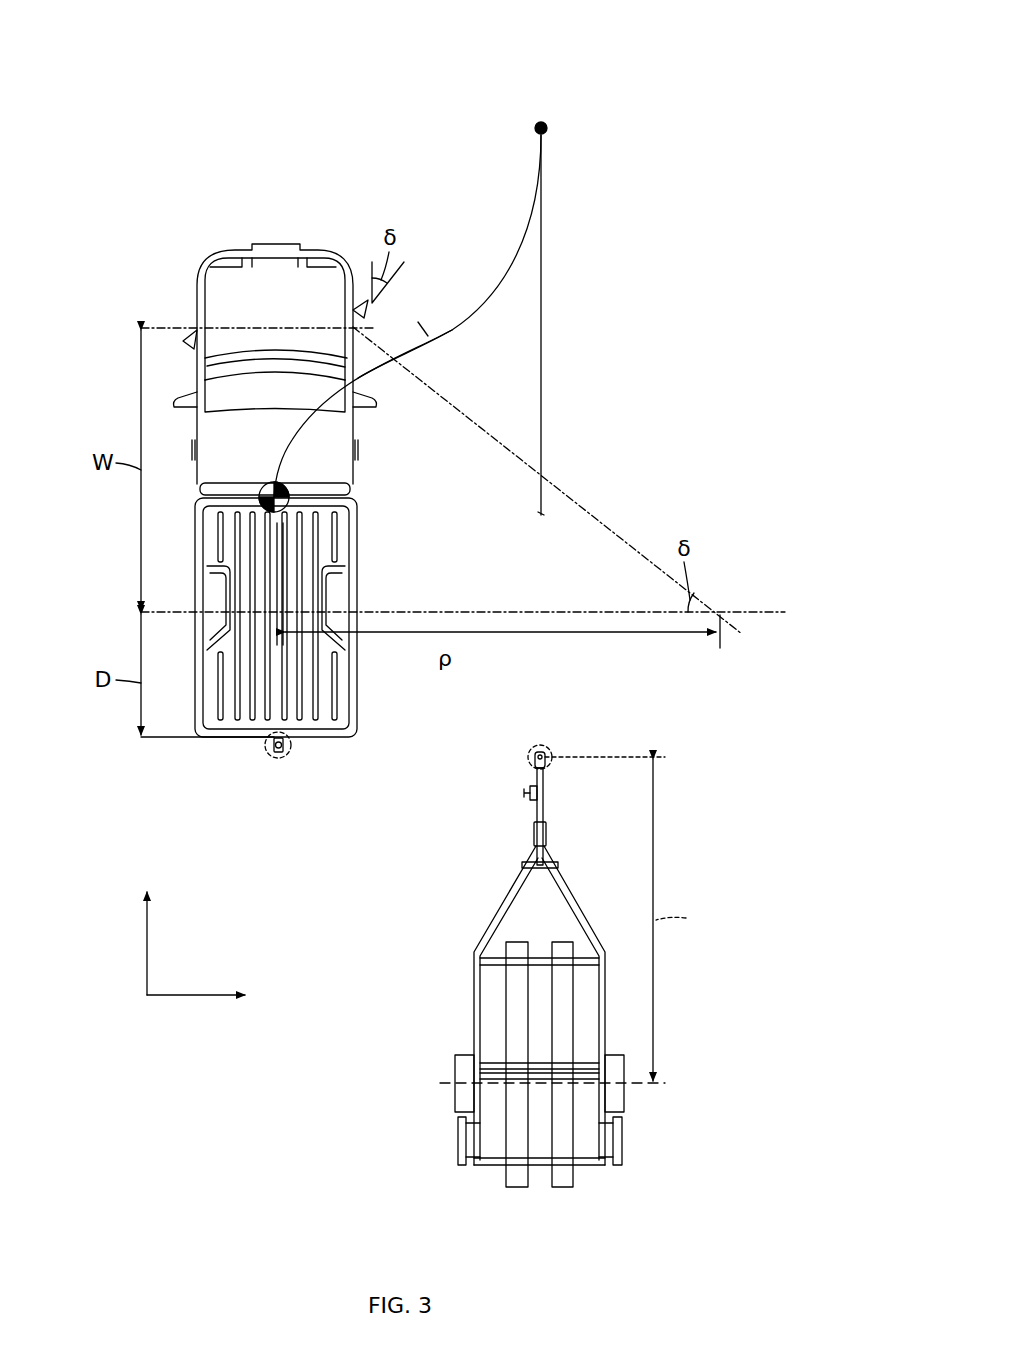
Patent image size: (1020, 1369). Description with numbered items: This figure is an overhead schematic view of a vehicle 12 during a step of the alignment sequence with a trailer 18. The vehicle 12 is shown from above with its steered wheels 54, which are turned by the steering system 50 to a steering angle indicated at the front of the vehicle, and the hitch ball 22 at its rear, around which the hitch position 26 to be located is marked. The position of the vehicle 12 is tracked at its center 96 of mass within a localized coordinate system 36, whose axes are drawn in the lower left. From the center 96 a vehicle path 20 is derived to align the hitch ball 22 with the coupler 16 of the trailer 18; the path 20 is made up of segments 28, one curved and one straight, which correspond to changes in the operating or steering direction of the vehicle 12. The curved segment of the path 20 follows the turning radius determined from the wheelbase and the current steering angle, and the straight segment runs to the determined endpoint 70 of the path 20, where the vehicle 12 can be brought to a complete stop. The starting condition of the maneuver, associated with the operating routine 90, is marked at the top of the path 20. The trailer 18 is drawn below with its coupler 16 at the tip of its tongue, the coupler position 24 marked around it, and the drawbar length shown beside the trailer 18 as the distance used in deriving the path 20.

The vehicle 12 is at (172, 250).
The coupler 16 is at (548, 760).
The trailer 18 is at (472, 997).
The vehicle path 20 is at (626, 74).
The hitch ball 22 is at (270, 746).
The coupler position 24 is at (550, 748).
The hitch position 26 is at (288, 755).
The segments 28 is at (488, 300).
The localized coordinate system 36 is at (201, 1022).
The steering system 50 is at (371, 367).
The steered wheels 54 is at (188, 342).
The endpoint 70 is at (538, 513).
The operating routine 90 is at (536, 122).
The center 96 is at (262, 507).